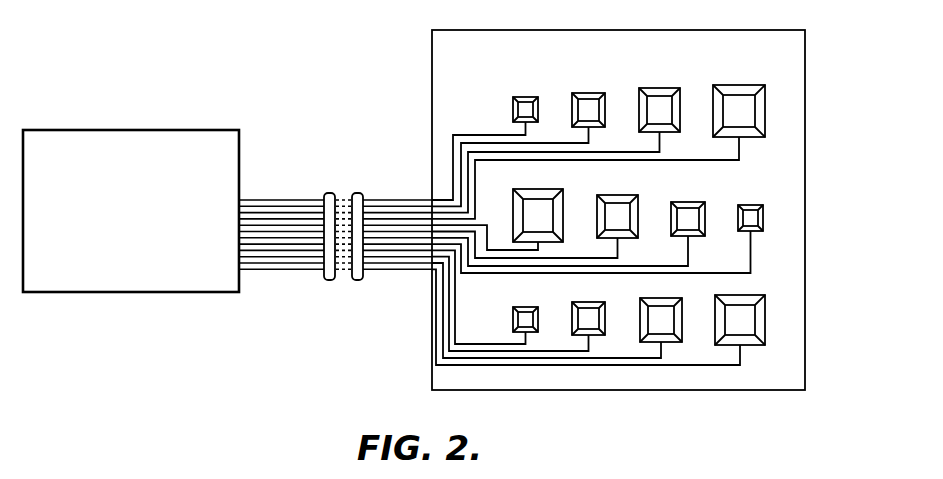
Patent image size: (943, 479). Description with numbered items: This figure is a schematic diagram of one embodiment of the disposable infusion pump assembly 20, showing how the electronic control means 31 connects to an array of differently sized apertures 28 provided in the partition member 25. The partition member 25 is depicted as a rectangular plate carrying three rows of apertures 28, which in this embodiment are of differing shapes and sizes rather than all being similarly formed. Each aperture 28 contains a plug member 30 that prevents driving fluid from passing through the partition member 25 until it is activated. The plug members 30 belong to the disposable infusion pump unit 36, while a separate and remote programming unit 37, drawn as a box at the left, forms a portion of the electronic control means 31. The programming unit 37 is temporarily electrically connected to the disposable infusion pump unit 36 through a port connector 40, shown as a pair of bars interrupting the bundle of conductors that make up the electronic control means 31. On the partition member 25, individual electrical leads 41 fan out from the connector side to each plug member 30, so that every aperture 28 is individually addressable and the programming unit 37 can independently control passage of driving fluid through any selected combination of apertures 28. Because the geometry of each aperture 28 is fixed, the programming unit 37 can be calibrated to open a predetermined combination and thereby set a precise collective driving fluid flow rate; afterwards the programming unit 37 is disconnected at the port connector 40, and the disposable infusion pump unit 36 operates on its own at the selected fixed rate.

The disposable infusion pump assembly 20 is at (372, 28).
The partition member 25 is at (788, 352).
The apertures 28 is at (765, 110).
The plug member 30 is at (660, 320).
The electronic control means 31 is at (312, 191).
The disposable infusion pump unit 36 is at (680, 29).
The programming unit 37 is at (172, 130).
The port connector 40 is at (330, 280).
The electrical leads 41 is at (478, 134).